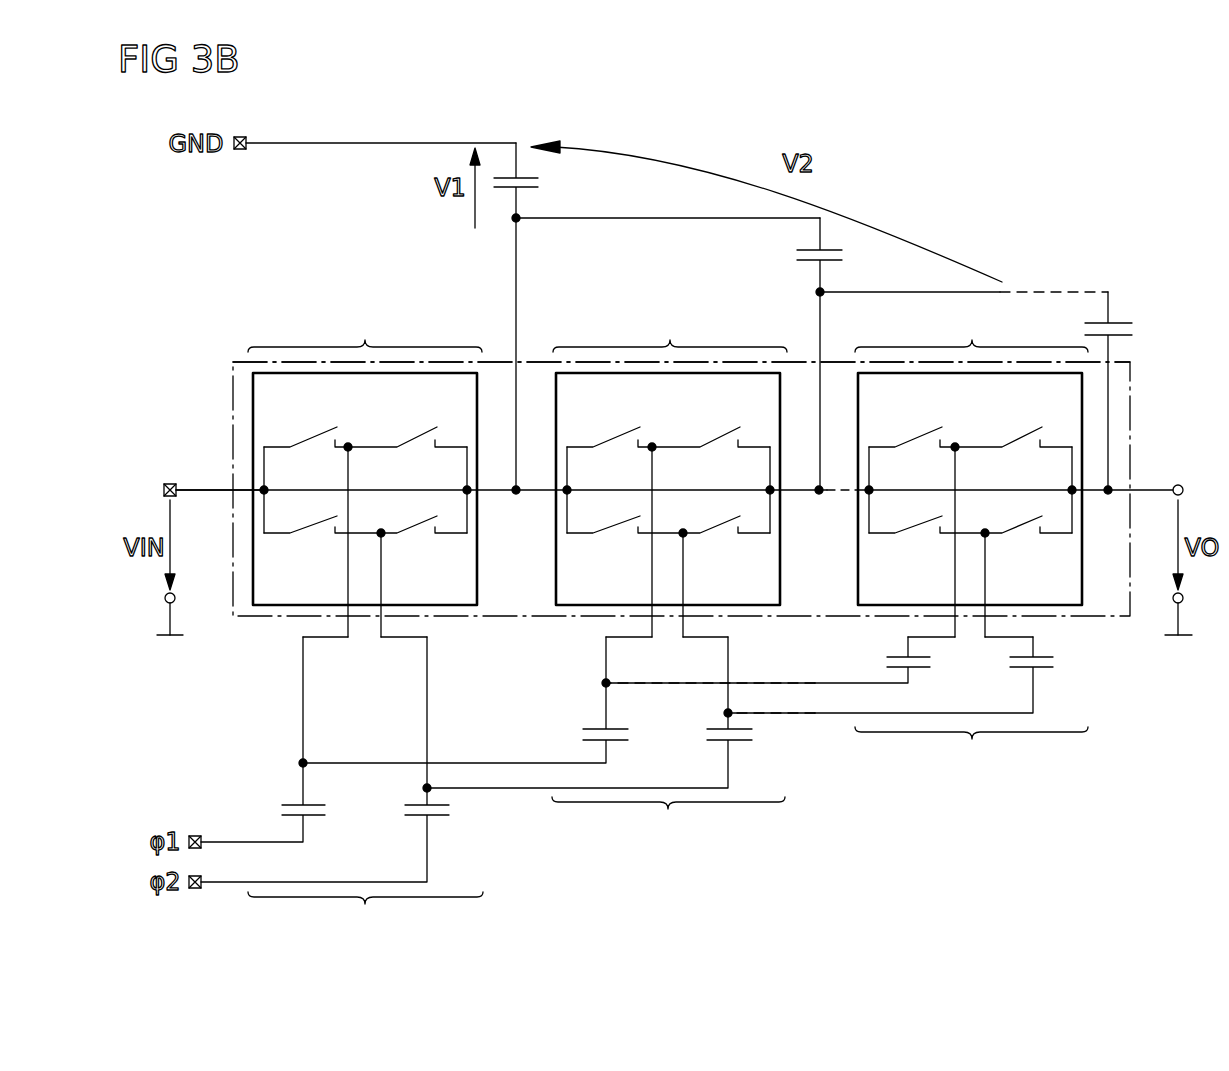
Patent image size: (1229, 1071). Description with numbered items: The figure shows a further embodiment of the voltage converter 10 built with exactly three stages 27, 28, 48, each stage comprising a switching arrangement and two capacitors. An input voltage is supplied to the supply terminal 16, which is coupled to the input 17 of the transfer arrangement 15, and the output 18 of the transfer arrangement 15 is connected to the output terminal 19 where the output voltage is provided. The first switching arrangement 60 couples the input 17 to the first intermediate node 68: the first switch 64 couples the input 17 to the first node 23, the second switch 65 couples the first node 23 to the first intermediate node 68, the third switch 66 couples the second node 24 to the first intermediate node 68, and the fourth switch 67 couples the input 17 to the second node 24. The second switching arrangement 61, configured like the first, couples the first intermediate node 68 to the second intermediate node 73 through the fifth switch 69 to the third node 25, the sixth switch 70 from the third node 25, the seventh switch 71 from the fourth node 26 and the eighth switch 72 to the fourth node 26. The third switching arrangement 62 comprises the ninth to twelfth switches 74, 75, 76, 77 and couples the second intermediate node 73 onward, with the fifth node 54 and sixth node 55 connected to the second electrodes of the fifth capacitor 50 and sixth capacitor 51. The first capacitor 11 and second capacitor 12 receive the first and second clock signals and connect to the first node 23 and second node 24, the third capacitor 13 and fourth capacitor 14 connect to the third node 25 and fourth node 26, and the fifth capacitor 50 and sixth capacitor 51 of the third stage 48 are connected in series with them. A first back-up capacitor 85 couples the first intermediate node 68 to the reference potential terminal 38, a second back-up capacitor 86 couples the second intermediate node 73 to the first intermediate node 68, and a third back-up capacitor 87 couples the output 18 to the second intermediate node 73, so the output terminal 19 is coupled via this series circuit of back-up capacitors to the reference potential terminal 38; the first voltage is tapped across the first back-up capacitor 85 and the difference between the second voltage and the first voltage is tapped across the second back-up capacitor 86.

The voltage converter 10 is at (1048, 136).
The first capacitor 11 is at (278, 812).
The second capacitor 12 is at (452, 812).
The third capacitor 13 is at (580, 738).
The fourth capacitor 14 is at (756, 741).
The transfer arrangement 15 is at (704, 360).
The supply terminal 16 is at (168, 478).
The input of the transfer arrangement 17 is at (236, 487).
The output of the transfer arrangement 18 is at (1132, 488).
The output terminal 19 is at (1180, 484).
The first node 23 is at (349, 442).
The second node 24 is at (385, 537).
The third node 25 is at (653, 442).
The fourth node 26 is at (687, 537).
The first stage 27 is at (365, 625).
The second stage 28 is at (669, 578).
The reference potential terminal 38 is at (244, 150).
The third stage 48 is at (971, 543).
The fifth capacitor 50 is at (884, 664).
The sixth capacitor 51 is at (1058, 664).
The fifth node 54 is at (956, 442).
The sixth node 55 is at (989, 537).
The first switching arrangement 60 is at (331, 505).
The second switching arrangement 61 is at (634, 505).
The third switching arrangement 62 is at (936, 505).
The first switch 64 is at (310, 440).
The second switch 65 is at (437, 440).
The third switch 66 is at (413, 525).
The fourth switch 67 is at (315, 525).
The first intermediate node 68 is at (520, 487).
The fifth switch 69 is at (613, 440).
The sixth switch 70 is at (740, 440).
The seventh switch 71 is at (716, 525).
The eighth switch 72 is at (618, 525).
The second intermediate node 73 is at (823, 487).
The ninth switch 74 is at (915, 440).
The tenth switch 75 is at (1042, 440).
The eleventh switch 76 is at (1018, 525).
The twelfth switch 77 is at (920, 525).
The first back-up capacitor 85 is at (542, 184).
The second back-up capacitor 86 is at (795, 256).
The third back-up capacitor 87 is at (1138, 333).